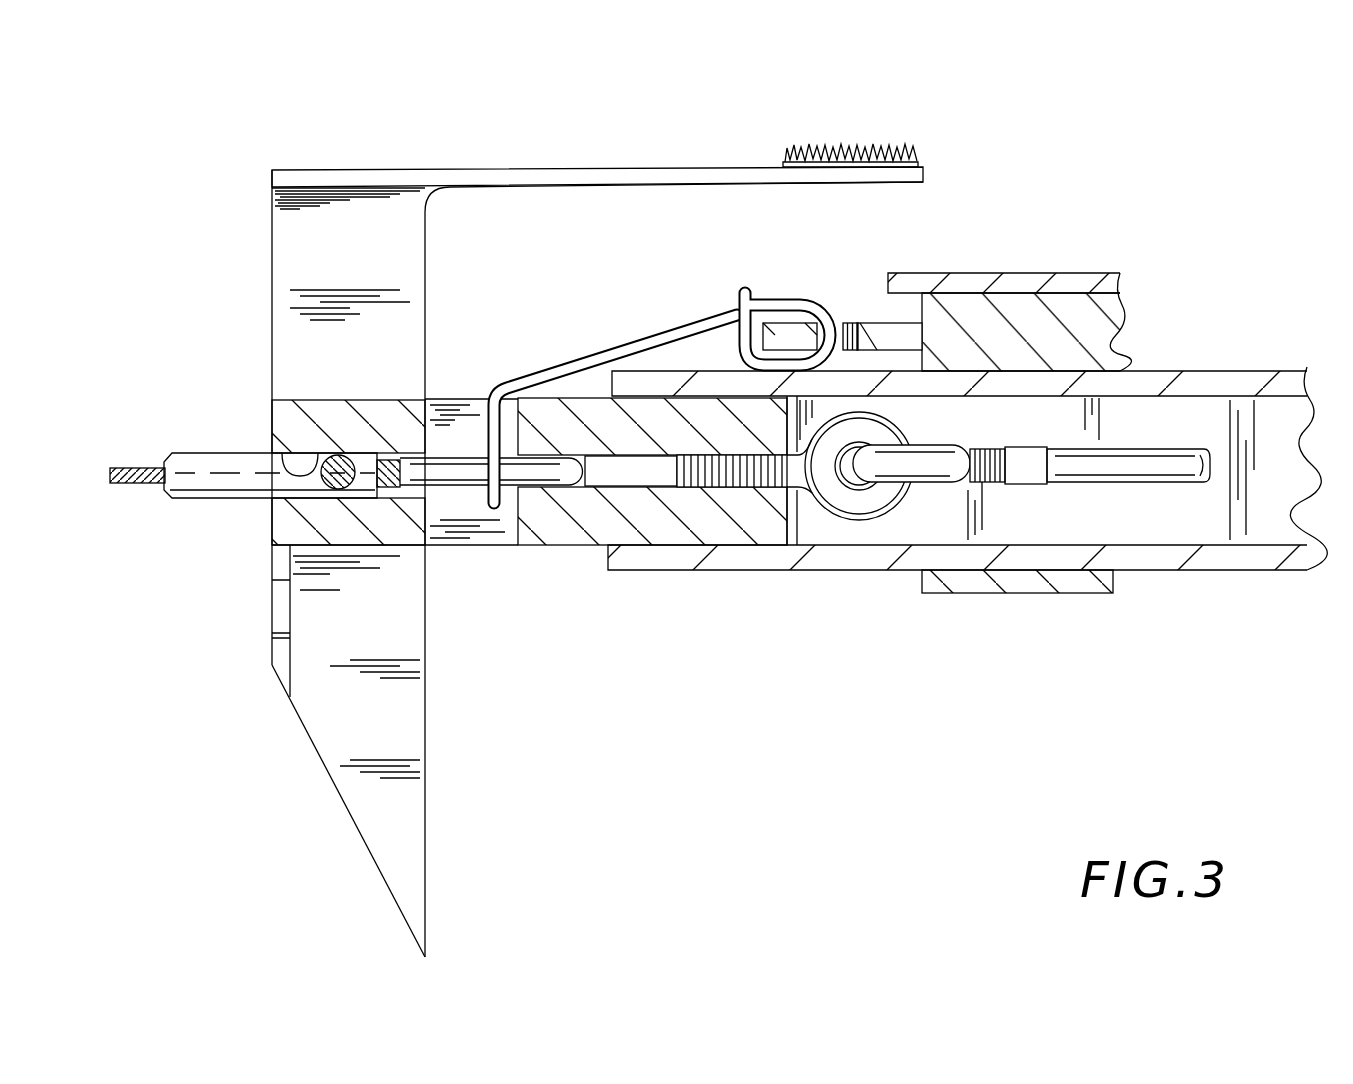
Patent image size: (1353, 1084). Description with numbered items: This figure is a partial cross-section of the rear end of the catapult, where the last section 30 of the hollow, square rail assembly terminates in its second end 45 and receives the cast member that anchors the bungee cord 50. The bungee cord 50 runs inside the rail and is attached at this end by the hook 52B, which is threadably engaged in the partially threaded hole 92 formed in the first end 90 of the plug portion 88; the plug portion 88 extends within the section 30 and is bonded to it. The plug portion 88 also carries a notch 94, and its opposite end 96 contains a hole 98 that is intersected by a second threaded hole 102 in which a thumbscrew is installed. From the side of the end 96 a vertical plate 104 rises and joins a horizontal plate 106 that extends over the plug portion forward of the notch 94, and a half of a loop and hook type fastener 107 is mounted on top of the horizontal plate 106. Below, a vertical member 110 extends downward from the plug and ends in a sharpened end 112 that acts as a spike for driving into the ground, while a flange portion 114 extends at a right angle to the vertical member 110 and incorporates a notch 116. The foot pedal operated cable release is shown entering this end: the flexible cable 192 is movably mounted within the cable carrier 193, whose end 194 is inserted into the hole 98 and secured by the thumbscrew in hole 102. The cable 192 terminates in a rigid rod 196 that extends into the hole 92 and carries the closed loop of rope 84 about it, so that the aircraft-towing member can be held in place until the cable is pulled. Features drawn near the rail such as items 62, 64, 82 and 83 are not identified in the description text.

The section 30 is at (897, 572).
The second end 45 is at (712, 546).
The bungee cord 50 is at (1177, 482).
The hook 52B is at (857, 523).
The lower block 62 is at (996, 593).
The mounting block 64 is at (1086, 273).
The tab 82 is at (905, 323).
The pin 83 is at (847, 323).
The closed loop of rope 84 is at (600, 345).
The plug portion 88 is at (555, 546).
The first end 90 is at (806, 528).
The partially threaded hole 92 is at (687, 458).
The notch 94 is at (482, 547).
The end 96 is at (373, 547).
The hole 98 is at (272, 400).
The second threaded hole 102 is at (340, 490).
The vertical plate 104 is at (272, 265).
The horizontal plate 106 is at (478, 169).
The half of a loop and hook type fastener 107 is at (920, 150).
The vertical member 110 is at (425, 767).
The sharpened end 112 is at (425, 886).
The flange portion 114 is at (272, 648).
The notch 116 is at (272, 608).
The flexible cable 192 is at (118, 468).
The cable carrier 193 is at (205, 453).
The end 194 is at (362, 500).
The rigid rod 196 is at (456, 455).